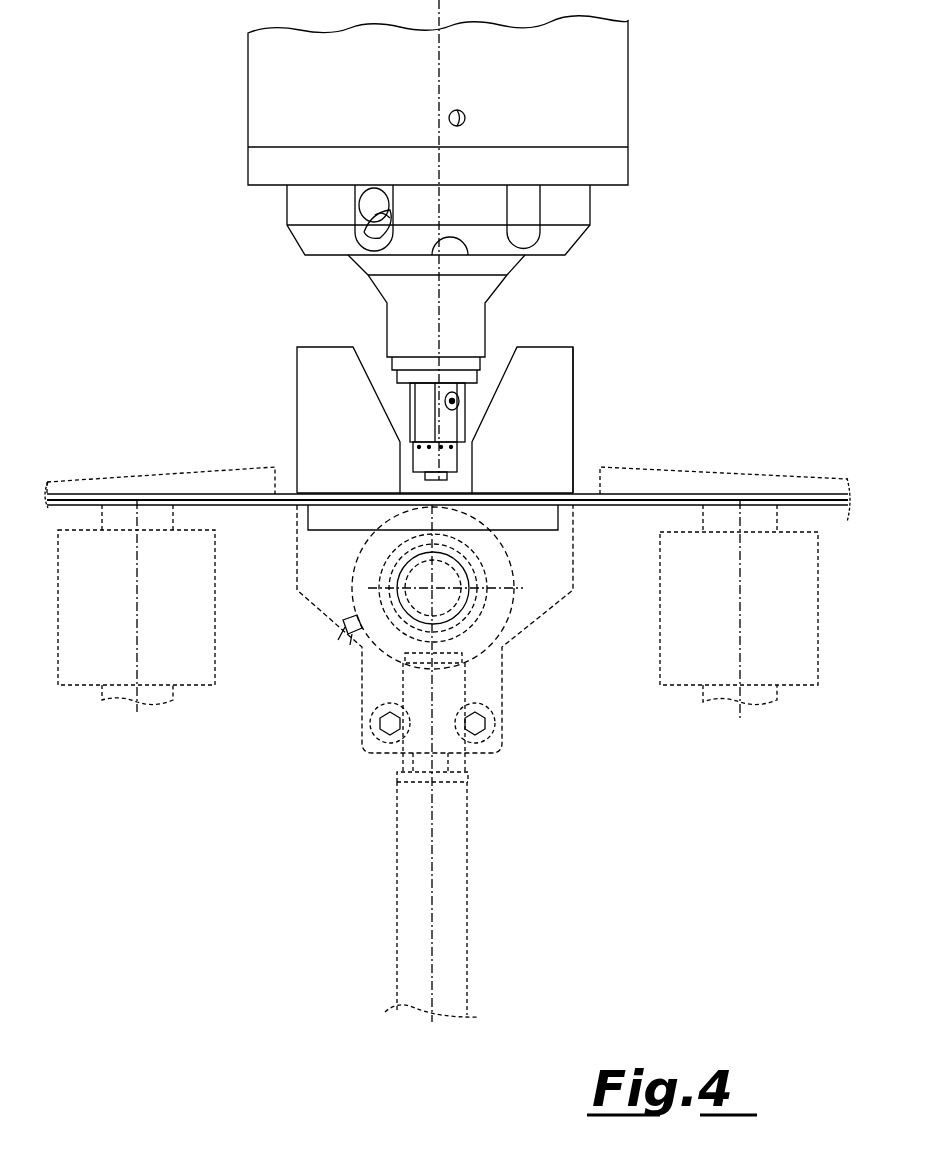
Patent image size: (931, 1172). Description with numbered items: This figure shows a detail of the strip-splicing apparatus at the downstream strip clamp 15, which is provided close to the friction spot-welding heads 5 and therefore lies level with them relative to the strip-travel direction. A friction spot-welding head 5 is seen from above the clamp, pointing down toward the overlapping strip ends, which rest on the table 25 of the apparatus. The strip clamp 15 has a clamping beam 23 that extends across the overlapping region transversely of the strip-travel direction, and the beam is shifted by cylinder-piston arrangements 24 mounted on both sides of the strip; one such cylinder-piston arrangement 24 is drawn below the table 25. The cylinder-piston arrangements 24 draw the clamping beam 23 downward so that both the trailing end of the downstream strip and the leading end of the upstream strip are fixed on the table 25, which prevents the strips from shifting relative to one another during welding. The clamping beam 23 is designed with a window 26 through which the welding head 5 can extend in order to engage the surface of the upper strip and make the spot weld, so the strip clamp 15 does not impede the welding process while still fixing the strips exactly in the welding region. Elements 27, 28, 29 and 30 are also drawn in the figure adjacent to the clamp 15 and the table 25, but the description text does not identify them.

The friction spot-welding head 5 is at (500, 323).
The downstream strip clamp 15 is at (588, 358).
The clamping beam 23 is at (568, 415).
The cylinder-piston arrangement 24 is at (387, 892).
The table 25 is at (592, 533).
The window 26 is at (408, 473).
The left plate 27 is at (213, 468).
The right plate 28 is at (667, 466).
The right drive unit 29 is at (721, 710).
The left drive unit 30 is at (113, 712).